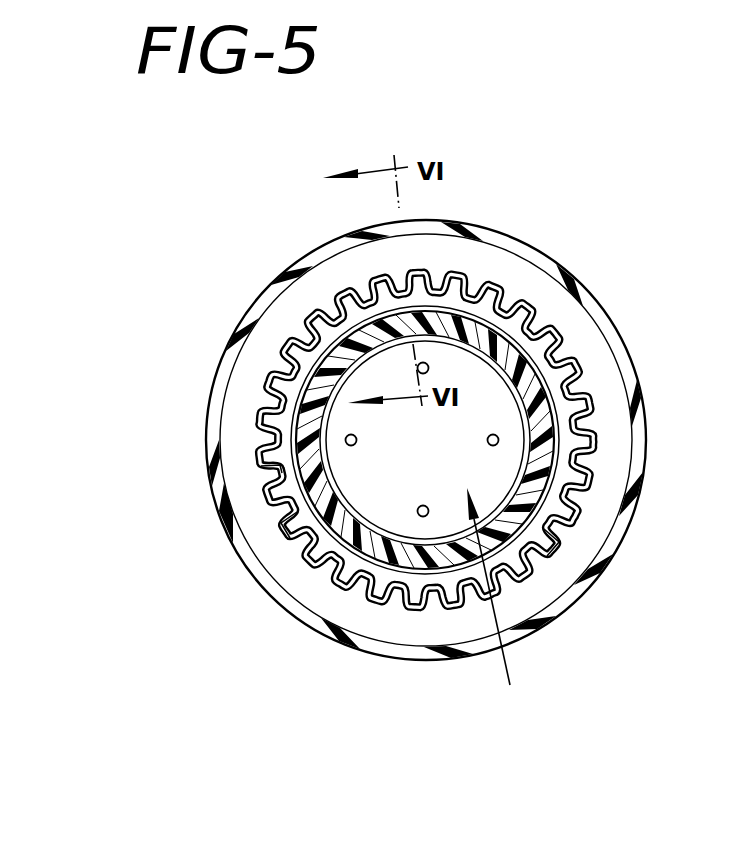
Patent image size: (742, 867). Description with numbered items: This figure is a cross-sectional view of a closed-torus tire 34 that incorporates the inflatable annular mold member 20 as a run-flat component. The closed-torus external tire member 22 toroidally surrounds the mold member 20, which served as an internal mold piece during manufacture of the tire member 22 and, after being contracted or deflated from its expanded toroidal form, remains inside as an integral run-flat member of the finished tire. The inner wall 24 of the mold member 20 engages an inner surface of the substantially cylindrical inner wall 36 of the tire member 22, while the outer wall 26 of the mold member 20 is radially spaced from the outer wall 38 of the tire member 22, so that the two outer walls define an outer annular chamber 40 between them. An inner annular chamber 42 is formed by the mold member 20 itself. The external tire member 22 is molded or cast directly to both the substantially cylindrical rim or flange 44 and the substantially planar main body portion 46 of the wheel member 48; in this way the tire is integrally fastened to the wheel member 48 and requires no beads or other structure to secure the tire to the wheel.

The inflatable annular member 20 is at (240, 389).
The external tire member 22 is at (250, 289).
The inner wall 24 is at (347, 523).
The outer wall 26 is at (257, 463).
The closed-torus tire 34 is at (537, 155).
The inner wall 36 is at (467, 328).
The outer wall 38 is at (620, 357).
The outer annular chamber 40 is at (612, 483).
The inner annular chamber 42 is at (548, 532).
The rim or flange 44 is at (358, 515).
The main body portion 46 is at (402, 517).
The wheel member 48 is at (498, 607).